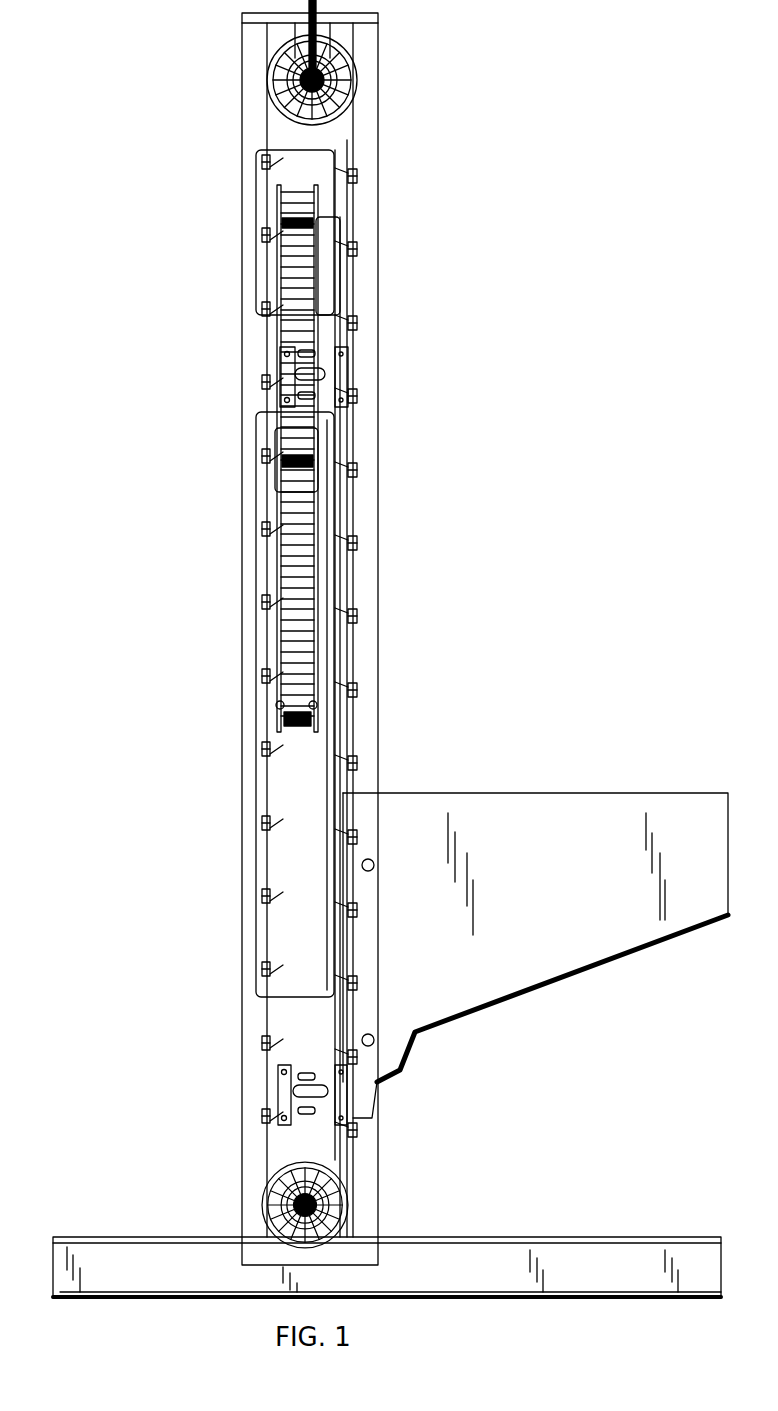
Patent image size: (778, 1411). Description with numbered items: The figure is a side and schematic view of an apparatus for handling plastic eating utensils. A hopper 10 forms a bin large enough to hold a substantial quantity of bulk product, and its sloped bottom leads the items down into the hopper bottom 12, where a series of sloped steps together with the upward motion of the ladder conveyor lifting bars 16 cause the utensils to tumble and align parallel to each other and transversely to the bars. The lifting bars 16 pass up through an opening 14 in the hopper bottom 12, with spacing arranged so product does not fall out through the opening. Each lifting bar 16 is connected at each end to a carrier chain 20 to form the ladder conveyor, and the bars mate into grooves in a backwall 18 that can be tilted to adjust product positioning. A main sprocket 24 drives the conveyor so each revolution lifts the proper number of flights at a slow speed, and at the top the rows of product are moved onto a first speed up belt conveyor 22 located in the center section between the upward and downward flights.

The hopper 10 is at (570, 848).
The hopper bottom 12 is at (405, 1060).
The opening 14 is at (362, 1158).
The ladder conveyor lifting bars 16 is at (355, 681).
The backwall 18 is at (355, 775).
The carrier chain 20 is at (355, 145).
The first speed up belt conveyor 22 is at (284, 237).
The main sprocket 24 is at (355, 67).